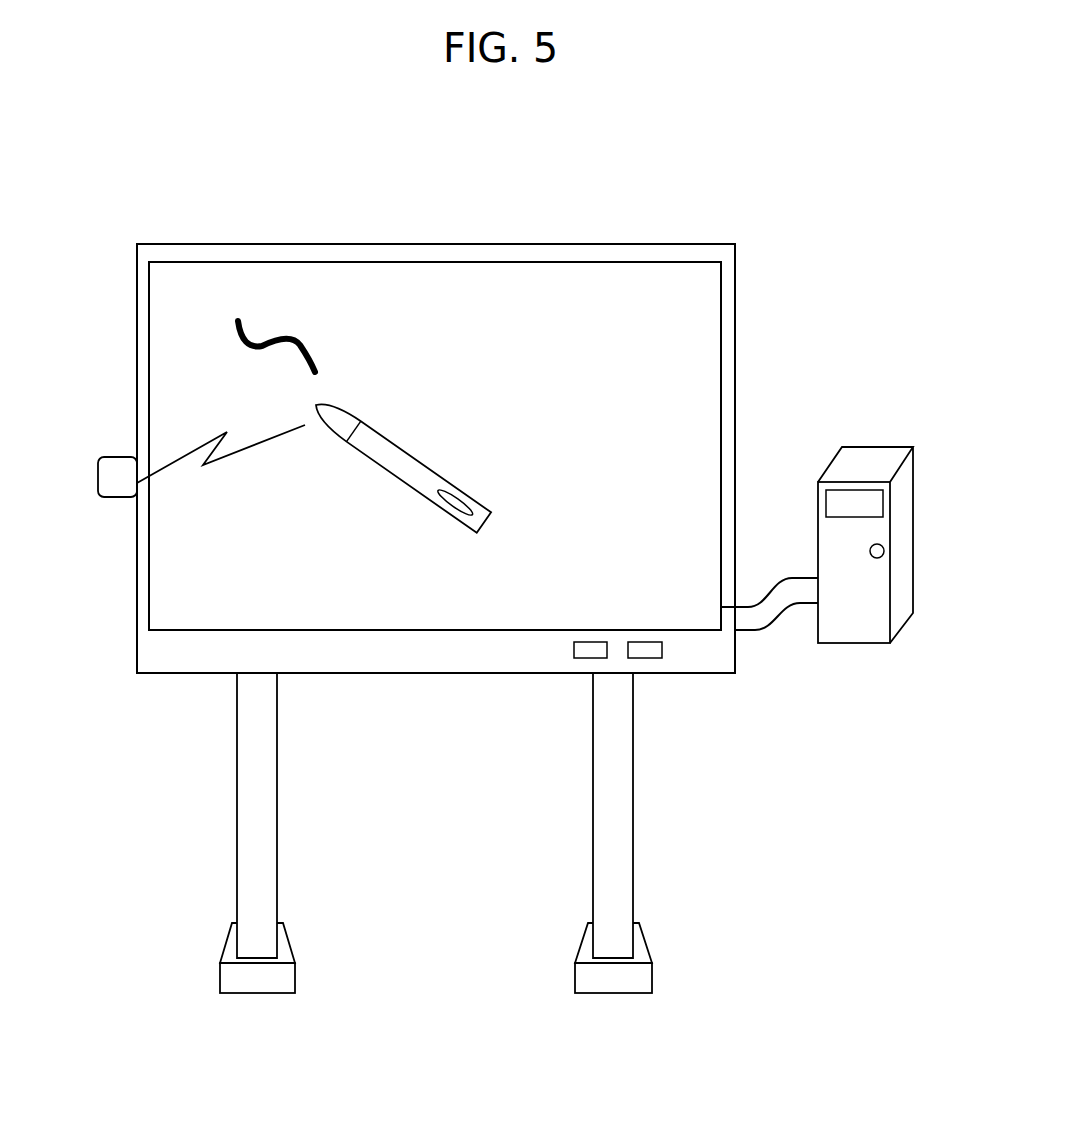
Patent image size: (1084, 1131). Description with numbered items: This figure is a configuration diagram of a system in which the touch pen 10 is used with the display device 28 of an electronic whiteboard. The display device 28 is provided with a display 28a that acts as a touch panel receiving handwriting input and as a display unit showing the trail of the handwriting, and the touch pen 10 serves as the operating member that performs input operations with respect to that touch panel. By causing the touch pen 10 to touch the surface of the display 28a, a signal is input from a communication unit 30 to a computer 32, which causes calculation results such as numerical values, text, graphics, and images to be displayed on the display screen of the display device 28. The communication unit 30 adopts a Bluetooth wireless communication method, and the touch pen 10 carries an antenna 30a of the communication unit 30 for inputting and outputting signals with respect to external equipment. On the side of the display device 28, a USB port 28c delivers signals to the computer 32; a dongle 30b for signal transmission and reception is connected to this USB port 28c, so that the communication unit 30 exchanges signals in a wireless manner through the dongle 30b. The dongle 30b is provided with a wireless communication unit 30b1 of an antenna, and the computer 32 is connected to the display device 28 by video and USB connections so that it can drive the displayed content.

The touch pen 10 is at (364, 403).
The display device 28 is at (476, 240).
The display 28a is at (598, 290).
The USB port 28c is at (120, 457).
The communication unit 30 is at (221, 454).
The antenna 30a is at (387, 472).
The dongle 30b is at (114, 588).
The wireless communication unit 30b1 is at (127, 497).
The computer 32 is at (893, 440).